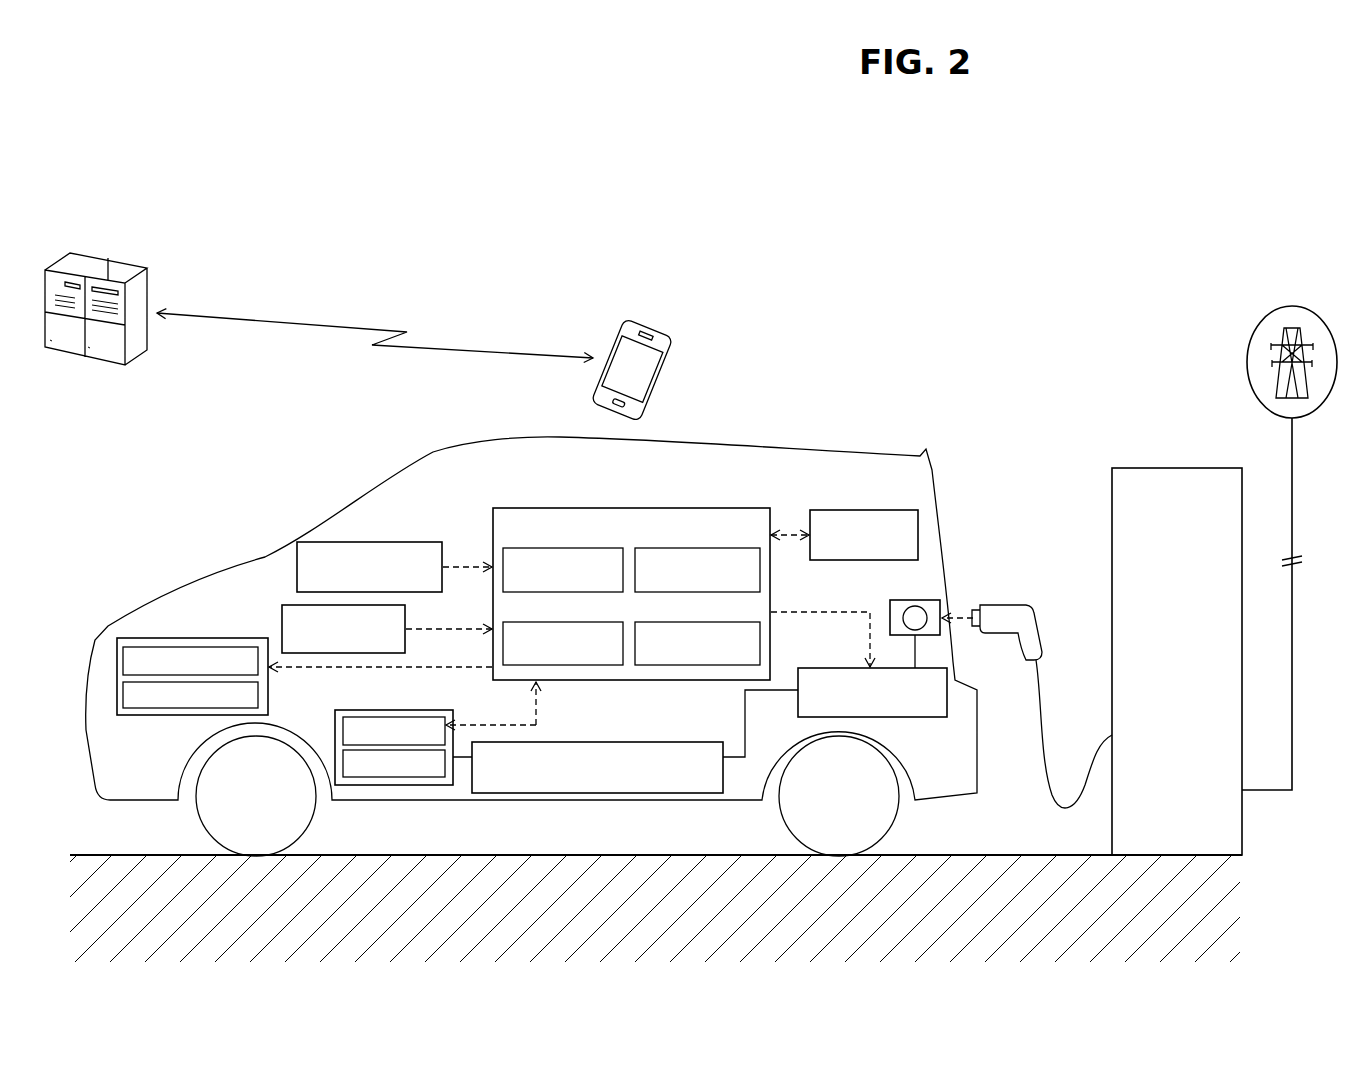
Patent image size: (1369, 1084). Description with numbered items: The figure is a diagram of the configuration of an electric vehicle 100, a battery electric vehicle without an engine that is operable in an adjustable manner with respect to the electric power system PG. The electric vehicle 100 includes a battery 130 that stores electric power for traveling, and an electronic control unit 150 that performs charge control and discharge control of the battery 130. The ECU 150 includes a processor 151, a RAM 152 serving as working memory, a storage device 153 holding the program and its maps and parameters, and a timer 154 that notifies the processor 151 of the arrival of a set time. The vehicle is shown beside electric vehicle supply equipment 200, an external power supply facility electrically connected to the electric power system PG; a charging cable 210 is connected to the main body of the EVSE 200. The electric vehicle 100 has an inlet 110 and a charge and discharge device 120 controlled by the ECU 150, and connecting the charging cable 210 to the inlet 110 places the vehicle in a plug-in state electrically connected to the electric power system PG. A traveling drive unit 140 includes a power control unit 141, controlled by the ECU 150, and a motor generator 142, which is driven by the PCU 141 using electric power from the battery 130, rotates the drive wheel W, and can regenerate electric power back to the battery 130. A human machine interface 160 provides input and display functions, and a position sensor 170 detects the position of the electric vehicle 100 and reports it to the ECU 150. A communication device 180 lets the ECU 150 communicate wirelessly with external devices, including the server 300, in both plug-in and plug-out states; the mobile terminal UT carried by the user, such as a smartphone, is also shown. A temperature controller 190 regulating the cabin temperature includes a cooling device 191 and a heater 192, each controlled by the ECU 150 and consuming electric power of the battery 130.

The electric vehicle 100 is at (675, 444).
The inlet 110 is at (890, 600).
The charge and discharge device 120 is at (912, 717).
The battery 130 is at (680, 742).
The traveling drive unit 140 is at (391, 760).
The power control unit 141 is at (449, 721).
The motor generator 142 is at (405, 778).
The electronic control unit 150 is at (705, 508).
The processor 151 is at (568, 548).
The random access memory 152 is at (568, 622).
The storage device 153 is at (703, 548).
The timer 154 is at (703, 622).
The human machine interface 160 is at (290, 605).
The position sensor 170 is at (318, 542).
The communication device 180 is at (858, 510).
The temperature controller 190 is at (163, 671).
The cooling device 191 is at (123, 661).
The heater 192 is at (123, 696).
The electric vehicle supply equipment 200 is at (1180, 468).
The charging cable 210 is at (1012, 605).
The server 300 is at (118, 267).
The mobile terminal UT is at (638, 324).
The electric power system PG is at (1310, 312).
The drive wheel W is at (207, 808).